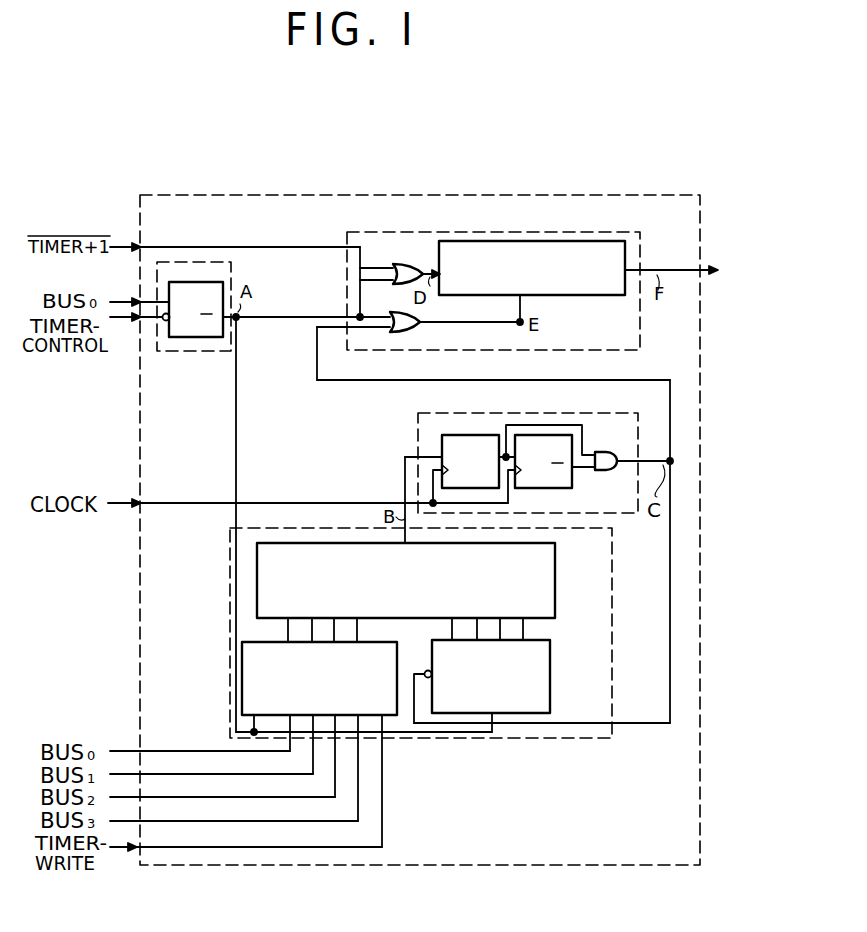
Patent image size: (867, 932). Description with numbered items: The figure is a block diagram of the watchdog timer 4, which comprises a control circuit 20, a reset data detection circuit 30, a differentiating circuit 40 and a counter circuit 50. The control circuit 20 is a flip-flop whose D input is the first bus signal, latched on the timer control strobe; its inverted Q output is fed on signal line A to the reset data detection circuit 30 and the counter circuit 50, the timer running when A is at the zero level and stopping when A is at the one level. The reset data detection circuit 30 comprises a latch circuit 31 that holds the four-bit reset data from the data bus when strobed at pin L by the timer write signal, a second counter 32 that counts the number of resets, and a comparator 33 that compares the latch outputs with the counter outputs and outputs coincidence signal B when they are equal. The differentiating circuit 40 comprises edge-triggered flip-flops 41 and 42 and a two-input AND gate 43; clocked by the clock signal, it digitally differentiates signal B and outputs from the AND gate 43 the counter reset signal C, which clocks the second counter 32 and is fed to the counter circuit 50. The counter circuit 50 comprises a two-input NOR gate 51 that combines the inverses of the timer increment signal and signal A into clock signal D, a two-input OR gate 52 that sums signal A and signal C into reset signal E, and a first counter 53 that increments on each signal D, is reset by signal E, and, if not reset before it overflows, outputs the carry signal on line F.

The watchdog timer 4 is at (468, 195).
The control circuit 20 is at (166, 352).
The reset data detection circuit 30 is at (166, 531).
The latch circuit 31 is at (397, 644).
The second counter 32 is at (550, 650).
The comparator 33 is at (555, 568).
The differentiating circuit 40 is at (259, 413).
The edge-triggered flip-flop 41 is at (442, 441).
The edge-triggered flip-flop 42 is at (555, 488).
The two-input AND gate 43 is at (605, 452).
The counter circuit 50 is at (315, 230).
The two-input NOR gate 51 is at (427, 266).
The two-input OR gate 52 is at (412, 331).
The first counter 53 is at (572, 241).